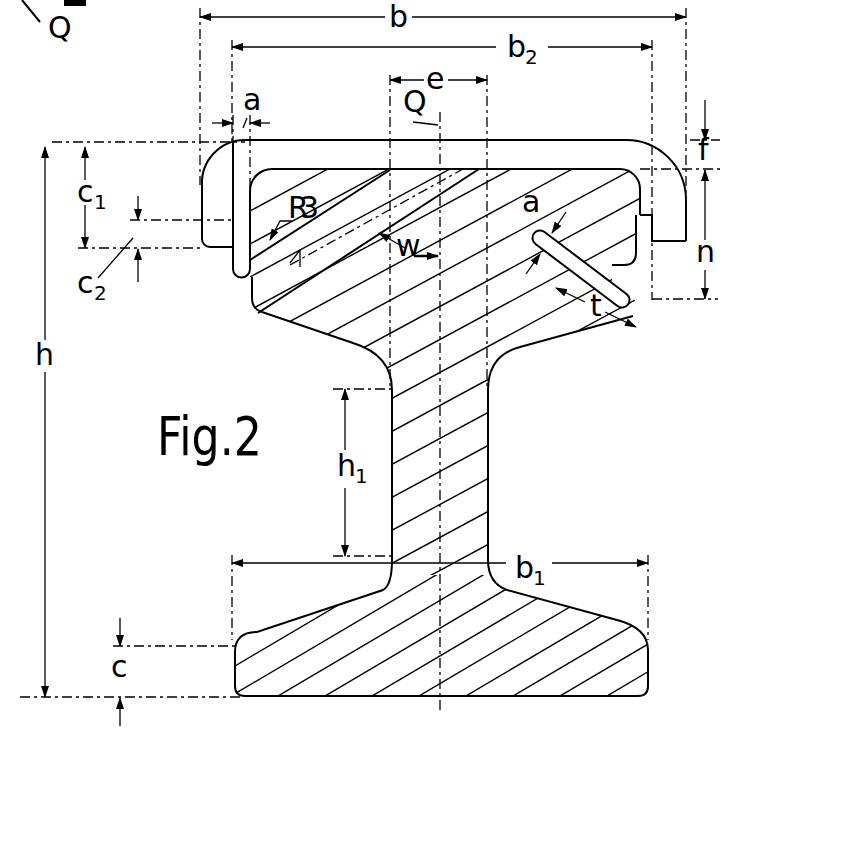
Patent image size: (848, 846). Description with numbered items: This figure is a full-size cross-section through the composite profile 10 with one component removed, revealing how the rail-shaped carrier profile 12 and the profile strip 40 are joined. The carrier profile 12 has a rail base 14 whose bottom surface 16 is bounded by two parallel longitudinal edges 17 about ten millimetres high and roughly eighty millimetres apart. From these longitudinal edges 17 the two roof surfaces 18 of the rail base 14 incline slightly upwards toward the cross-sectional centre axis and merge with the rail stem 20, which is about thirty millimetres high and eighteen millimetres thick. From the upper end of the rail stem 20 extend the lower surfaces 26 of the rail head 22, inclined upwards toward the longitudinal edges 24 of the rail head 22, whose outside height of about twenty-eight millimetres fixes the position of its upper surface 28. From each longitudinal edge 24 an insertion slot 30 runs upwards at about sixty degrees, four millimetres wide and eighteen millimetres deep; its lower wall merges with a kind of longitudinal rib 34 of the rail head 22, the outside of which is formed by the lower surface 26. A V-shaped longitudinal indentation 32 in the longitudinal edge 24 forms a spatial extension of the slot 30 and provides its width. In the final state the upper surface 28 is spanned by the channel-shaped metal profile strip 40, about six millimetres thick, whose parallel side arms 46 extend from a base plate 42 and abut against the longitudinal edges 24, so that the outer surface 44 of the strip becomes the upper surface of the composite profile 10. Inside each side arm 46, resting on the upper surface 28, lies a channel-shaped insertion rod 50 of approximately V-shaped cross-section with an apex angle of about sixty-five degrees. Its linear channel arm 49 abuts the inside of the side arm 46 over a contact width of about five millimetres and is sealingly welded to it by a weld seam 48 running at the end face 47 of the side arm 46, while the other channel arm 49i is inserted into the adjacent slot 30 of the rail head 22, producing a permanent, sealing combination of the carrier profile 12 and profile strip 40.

The composite profile 10 is at (408, 375).
The rail-shaped carrier profile 12 is at (425, 230).
The rail base 14 is at (404, 628).
The bottom surface 16 is at (304, 696).
The longitudinal edges 17 is at (233, 673).
The roof surfaces 18 is at (583, 612).
The rail stem 20 is at (458, 500).
The rail head 22 is at (357, 207).
The longitudinal edges of the rail head 24 is at (186, 266).
The lower surfaces of the rail head 26 is at (328, 343).
The upper surface of the rail head 28 is at (583, 168).
The insertion slot 30 is at (641, 187).
The longitudinal indentation 32 is at (641, 213).
The longitudinal rib 34 is at (253, 310).
The profile strip 40 is at (340, 140).
The base plate 42 is at (418, 222).
The outer surface of the profile strip 44 is at (360, 138).
The side arms 46 is at (213, 228).
The end face of the side arm 47 is at (676, 246).
The weld seam 48 is at (216, 250).
The channel arm 49 is at (253, 197).
The other channel arm 49i is at (364, 278).
The insertion rod 50 is at (270, 279).